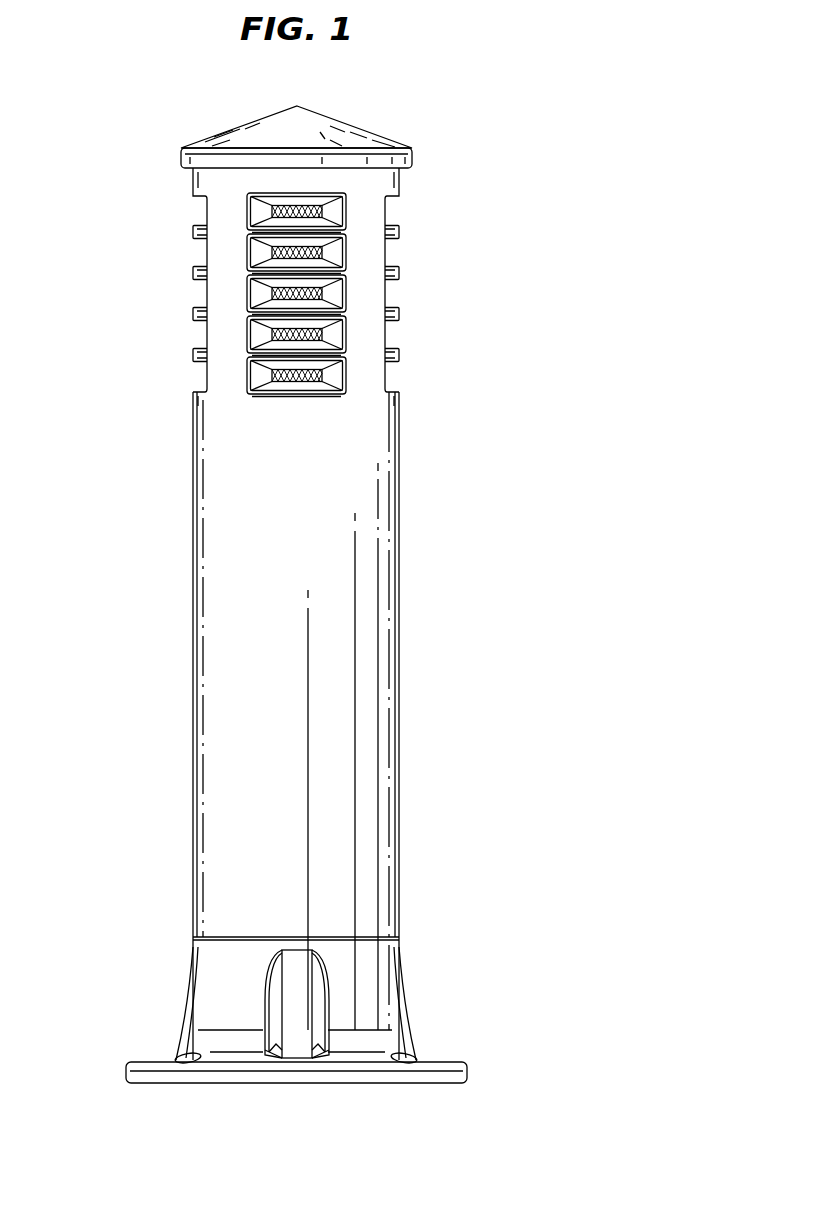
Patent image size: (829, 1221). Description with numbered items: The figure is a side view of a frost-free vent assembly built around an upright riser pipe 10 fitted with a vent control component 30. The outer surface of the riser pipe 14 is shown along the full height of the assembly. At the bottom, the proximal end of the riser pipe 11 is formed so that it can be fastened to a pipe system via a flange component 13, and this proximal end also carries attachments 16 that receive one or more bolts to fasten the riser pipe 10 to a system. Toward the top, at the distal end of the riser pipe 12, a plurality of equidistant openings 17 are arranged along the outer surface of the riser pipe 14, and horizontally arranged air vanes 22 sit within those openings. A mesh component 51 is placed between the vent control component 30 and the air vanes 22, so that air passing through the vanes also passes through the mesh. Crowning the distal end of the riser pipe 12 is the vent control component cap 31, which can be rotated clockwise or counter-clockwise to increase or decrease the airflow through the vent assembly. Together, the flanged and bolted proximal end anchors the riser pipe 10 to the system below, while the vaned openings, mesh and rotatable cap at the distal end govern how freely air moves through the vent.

The riser pipe 10 is at (255, 896).
The proximal end of the riser pipe 11 is at (328, 808).
The distal end of the riser pipe 12 is at (367, 287).
The flange component 13 is at (137, 1068).
The outer surface of the riser pipe 14 is at (305, 491).
The attachments 16 is at (188, 1053).
The openings 17 is at (202, 213).
The air vanes 22 is at (400, 233).
The vent control component 30 is at (278, 134).
The vent control component cap 31 is at (323, 128).
The mesh component 51 is at (347, 261).